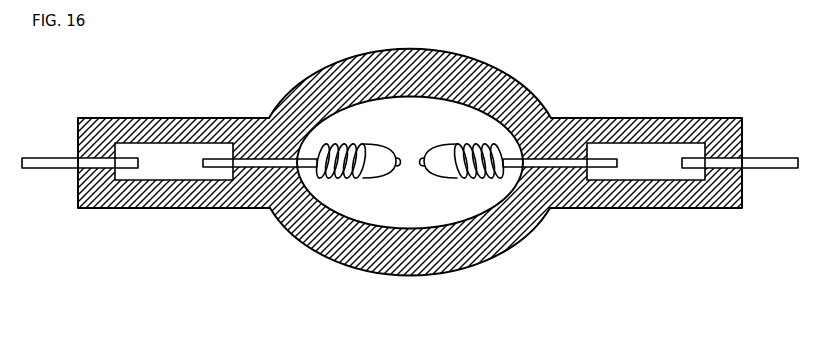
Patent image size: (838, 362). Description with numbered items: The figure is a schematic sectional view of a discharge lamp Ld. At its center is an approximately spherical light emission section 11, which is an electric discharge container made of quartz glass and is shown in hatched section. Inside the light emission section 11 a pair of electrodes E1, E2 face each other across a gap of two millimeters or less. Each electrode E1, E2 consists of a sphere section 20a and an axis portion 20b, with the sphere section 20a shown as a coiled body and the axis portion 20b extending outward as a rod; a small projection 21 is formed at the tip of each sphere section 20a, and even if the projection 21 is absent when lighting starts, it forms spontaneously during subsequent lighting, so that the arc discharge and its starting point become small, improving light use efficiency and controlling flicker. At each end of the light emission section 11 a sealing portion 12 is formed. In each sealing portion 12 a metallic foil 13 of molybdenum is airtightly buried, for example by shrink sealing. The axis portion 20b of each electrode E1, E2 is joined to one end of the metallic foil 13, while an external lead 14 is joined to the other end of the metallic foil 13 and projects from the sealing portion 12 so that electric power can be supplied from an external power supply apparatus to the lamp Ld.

The light emission section 11 is at (408, 276).
The sealing portion 12 is at (187, 208).
The metallic foil 13 is at (168, 162).
The external lead 14 is at (49, 162).
The sphere section 20a is at (370, 179).
The axis portion 20b is at (313, 168).
The projection 21 is at (401, 168).
The electrode E1 is at (367, 142).
The electrode E2 is at (453, 142).
The discharge lamp Ld is at (538, 76).